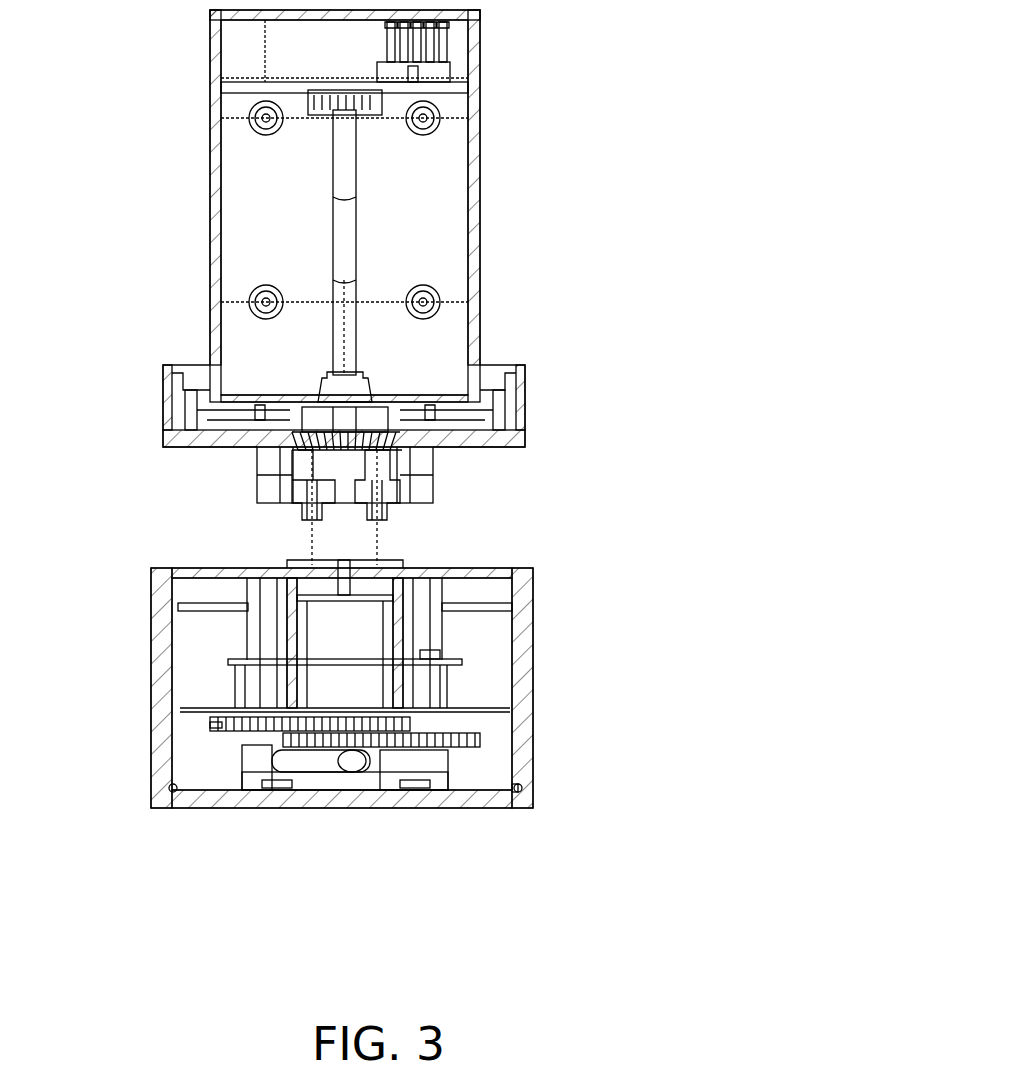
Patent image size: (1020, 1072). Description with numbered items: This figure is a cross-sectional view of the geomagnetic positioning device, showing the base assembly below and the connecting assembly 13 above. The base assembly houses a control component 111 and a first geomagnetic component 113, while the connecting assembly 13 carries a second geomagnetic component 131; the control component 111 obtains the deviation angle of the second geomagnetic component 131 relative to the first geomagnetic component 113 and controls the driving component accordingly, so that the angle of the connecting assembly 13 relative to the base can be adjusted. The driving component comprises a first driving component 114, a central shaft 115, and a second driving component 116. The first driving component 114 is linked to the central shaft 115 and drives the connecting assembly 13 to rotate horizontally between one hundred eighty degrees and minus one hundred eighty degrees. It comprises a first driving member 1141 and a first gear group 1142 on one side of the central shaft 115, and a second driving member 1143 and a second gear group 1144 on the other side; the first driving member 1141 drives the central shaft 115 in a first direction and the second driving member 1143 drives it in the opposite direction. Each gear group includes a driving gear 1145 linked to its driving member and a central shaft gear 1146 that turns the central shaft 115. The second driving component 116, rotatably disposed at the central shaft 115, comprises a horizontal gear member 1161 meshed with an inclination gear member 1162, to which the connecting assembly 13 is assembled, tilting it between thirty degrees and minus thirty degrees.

The connecting assembly 13 is at (530, 192).
The second geomagnetic component 131 is at (424, 73).
The central shaft 115 is at (333, 470).
The second driving component 116 is at (502, 510).
The horizontal gear member 1161 is at (350, 450).
The inclination gear member 1162 is at (390, 451).
The control component 111 is at (237, 660).
The first geomagnetic component 113 is at (440, 652).
The first driving component 114 is at (252, 850).
The first driving member 1141 is at (268, 635).
The first gear group 1142 is at (263, 746).
The second driving member 1143 is at (405, 652).
The second gear group 1144 is at (421, 765).
The driving gear 1145 is at (222, 720).
The central shaft gear 1146 is at (343, 745).